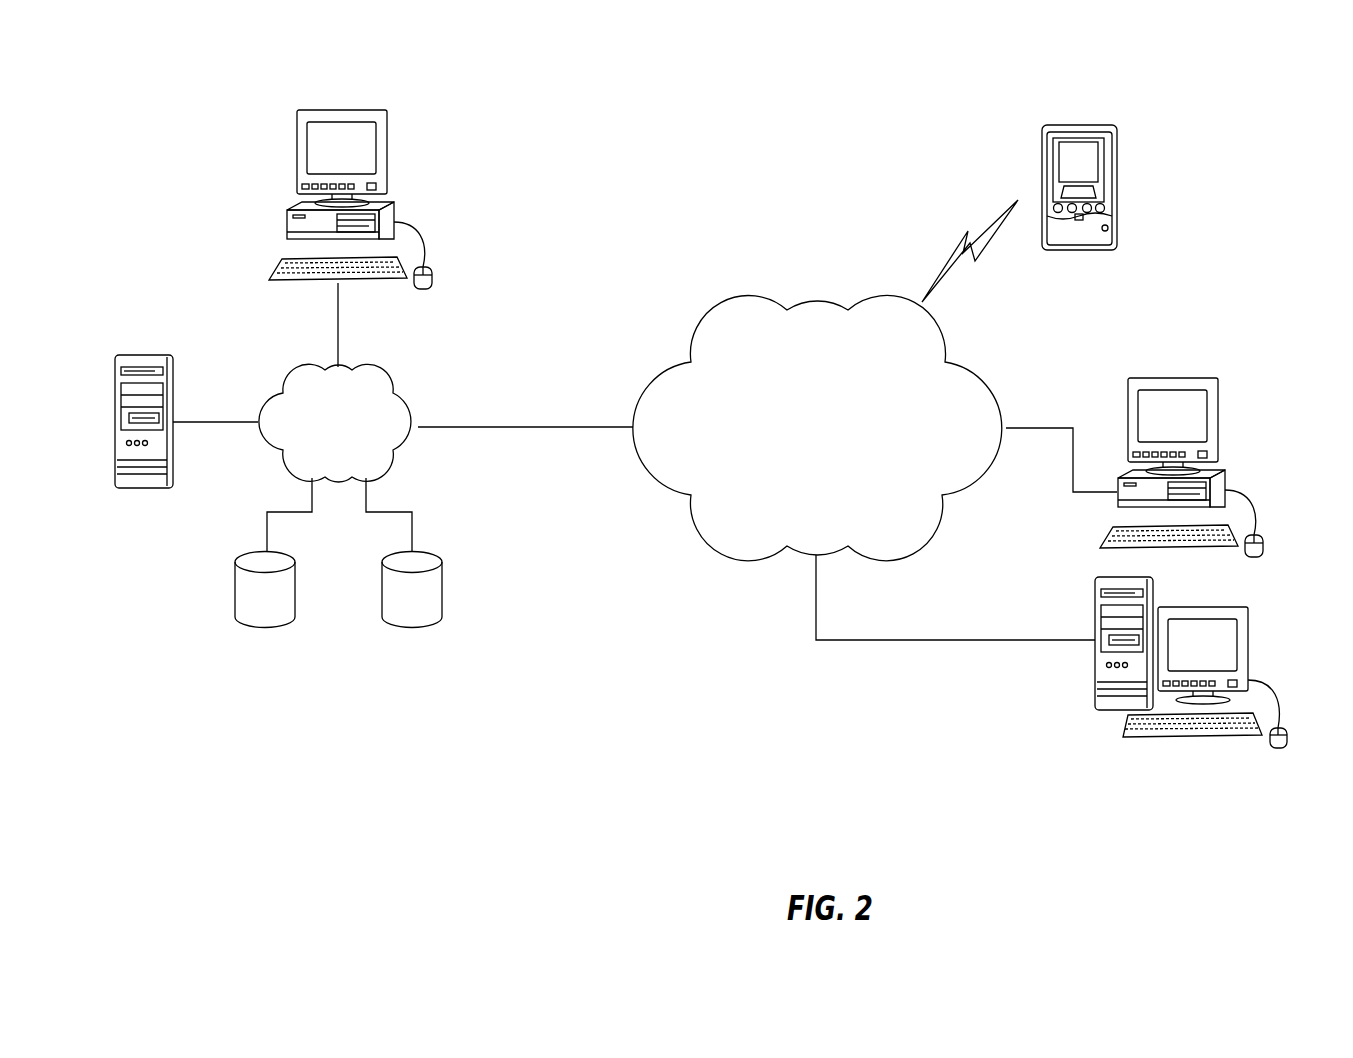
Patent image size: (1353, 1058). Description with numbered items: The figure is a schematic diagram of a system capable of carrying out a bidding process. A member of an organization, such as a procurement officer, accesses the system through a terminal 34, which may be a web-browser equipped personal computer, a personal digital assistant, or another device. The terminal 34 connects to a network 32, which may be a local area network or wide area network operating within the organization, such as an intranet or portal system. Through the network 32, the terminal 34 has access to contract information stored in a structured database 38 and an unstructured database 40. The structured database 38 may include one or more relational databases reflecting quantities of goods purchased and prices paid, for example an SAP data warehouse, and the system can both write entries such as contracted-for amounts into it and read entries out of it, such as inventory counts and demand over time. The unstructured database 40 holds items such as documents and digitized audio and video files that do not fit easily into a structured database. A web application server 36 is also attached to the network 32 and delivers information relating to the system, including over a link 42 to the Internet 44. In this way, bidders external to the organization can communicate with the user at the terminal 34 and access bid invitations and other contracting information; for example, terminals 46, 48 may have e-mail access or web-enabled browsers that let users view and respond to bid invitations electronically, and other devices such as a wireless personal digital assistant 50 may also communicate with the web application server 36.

The network 32 is at (313, 365).
The terminal 34 is at (297, 158).
The web application server 36 is at (150, 355).
The structured database 38 is at (255, 550).
The unstructured database 40 is at (397, 550).
The link 42 is at (540, 426).
The Internet 44 is at (755, 301).
The terminal 46 is at (1250, 637).
The terminal 48 is at (1222, 423).
The wireless personal digital assistant 50 is at (1118, 188).